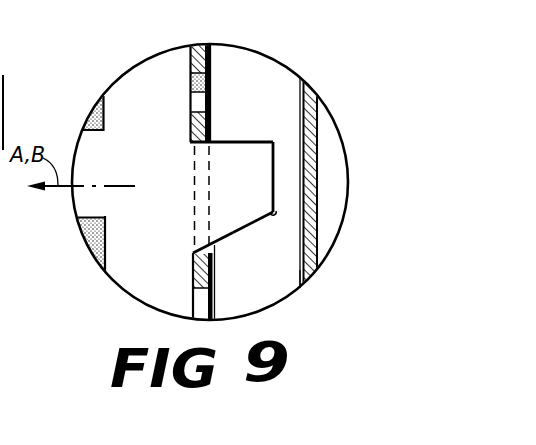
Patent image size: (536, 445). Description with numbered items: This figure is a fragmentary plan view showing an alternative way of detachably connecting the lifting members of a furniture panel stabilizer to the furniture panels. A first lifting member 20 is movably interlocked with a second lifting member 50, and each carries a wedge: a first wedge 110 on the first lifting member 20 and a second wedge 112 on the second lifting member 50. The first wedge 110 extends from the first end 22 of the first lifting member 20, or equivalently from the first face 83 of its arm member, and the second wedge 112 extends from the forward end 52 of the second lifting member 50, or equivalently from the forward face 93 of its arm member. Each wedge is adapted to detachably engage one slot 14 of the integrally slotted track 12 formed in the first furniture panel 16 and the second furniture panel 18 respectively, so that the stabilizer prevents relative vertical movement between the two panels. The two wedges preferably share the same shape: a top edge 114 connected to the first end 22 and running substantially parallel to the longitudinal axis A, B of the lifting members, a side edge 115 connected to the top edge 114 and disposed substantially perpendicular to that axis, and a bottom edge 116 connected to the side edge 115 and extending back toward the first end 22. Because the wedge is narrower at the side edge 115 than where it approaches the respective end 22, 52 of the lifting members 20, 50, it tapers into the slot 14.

The integrally slotted track 12 is at (290, 266).
The slot 14 is at (198, 222).
The first furniture panel 16 is at (333, 146).
The second furniture panel 18 is at (338, 114).
The first lifting member 20 is at (84, 143).
The first end 22 is at (214, 303).
The second lifting member 50 is at (83, 200).
The forward end 52 is at (196, 45).
The first face 83 is at (207, 92).
The forward face 93 is at (211, 62).
The first wedge 110 is at (273, 211).
The second wedge 112 is at (274, 214).
The top edge 114 is at (232, 141).
The side edge 115 is at (275, 175).
The bottom edge 116 is at (228, 243).